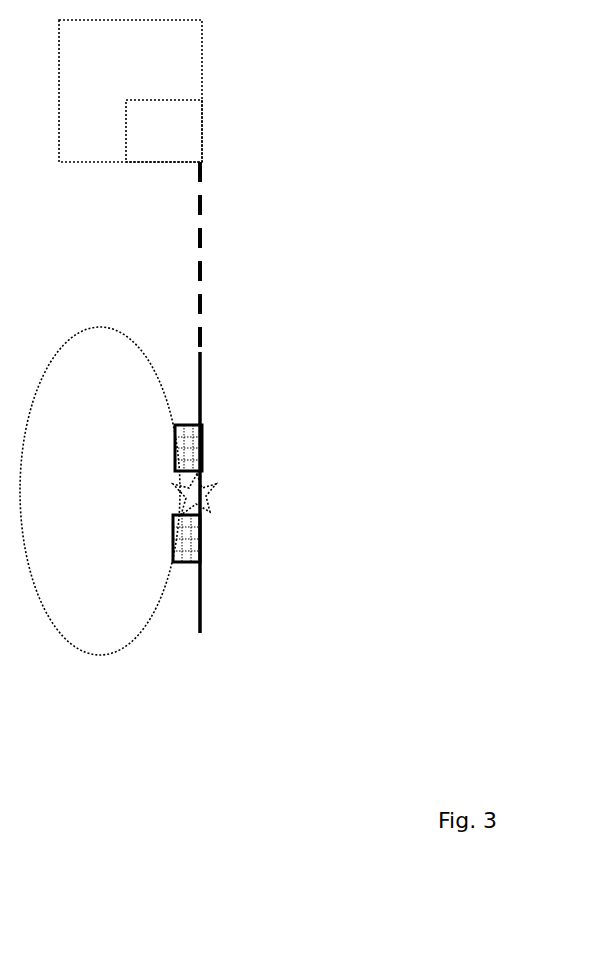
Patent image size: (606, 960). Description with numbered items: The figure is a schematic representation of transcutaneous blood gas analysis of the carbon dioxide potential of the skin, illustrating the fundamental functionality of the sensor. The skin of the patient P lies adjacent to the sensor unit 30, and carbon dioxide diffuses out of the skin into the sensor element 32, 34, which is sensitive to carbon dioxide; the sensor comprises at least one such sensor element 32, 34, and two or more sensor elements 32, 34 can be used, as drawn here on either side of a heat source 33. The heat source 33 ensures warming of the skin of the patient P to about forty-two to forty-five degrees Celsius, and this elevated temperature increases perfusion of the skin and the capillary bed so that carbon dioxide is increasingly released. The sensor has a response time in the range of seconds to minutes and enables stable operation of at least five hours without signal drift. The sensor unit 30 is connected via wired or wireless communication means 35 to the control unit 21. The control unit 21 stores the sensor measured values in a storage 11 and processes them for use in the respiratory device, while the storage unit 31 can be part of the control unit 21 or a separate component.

The control unit 21 is at (173, 75).
The storage 11 is at (172, 125).
The communication means 35 is at (202, 273).
The sensor unit 30 is at (326, 308).
The storage unit 31 is at (201, 412).
The sensor element 32 is at (190, 460).
The heat source 33 is at (207, 497).
The sensor element 34 is at (201, 563).
The patient P is at (98, 605).